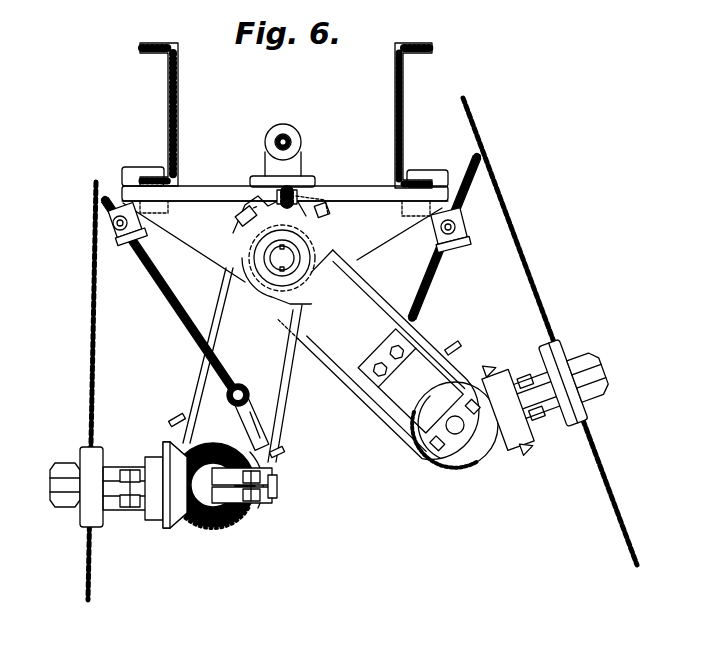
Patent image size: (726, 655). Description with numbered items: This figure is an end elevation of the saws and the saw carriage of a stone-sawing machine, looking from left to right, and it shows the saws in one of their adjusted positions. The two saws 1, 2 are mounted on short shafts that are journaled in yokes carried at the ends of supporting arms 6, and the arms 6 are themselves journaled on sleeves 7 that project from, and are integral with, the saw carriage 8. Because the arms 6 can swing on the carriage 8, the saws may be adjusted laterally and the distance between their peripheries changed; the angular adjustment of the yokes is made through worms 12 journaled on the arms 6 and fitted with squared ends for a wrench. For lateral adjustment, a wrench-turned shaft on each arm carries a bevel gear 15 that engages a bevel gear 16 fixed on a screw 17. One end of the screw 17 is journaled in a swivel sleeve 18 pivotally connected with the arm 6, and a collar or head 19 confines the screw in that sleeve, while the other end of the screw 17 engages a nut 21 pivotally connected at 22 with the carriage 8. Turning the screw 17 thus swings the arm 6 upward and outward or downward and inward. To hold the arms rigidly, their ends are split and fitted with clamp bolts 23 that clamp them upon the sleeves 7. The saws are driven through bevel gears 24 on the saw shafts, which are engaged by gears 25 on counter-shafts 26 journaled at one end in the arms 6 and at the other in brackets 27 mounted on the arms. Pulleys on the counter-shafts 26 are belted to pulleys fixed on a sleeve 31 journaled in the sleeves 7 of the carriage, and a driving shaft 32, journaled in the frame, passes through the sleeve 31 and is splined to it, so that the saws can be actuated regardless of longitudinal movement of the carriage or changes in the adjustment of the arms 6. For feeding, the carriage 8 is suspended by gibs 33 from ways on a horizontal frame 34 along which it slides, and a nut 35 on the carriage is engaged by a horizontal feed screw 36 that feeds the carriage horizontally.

The saw 1 is at (612, 501).
The saw 2 is at (84, 560).
The supporting arm 6 is at (341, 379).
The sleeve 7 is at (311, 229).
The saw carriage 8 is at (285, 209).
The worm 12 is at (176, 418).
The bevel gear 15 is at (253, 405).
The bevel gear 16 is at (241, 392).
The screw 17 is at (180, 321).
The swivel sleeve 18 is at (258, 430).
The collar or head 19 is at (272, 446).
The nut 21 is at (118, 240).
The pivotal connection 22 is at (113, 222).
The clamp bolt 23 is at (222, 243).
The bevel gear 24 is at (518, 450).
The gear 25 is at (220, 530).
The counter-shaft 26 is at (449, 424).
The bracket 27 is at (410, 381).
The sleeve 31 is at (292, 256).
The driving shaft 32 is at (280, 258).
The gib 33 is at (142, 167).
The horizontal frame 34 is at (168, 110).
The nut 35 is at (304, 140).
The horizontal feed screw 36 is at (266, 140).